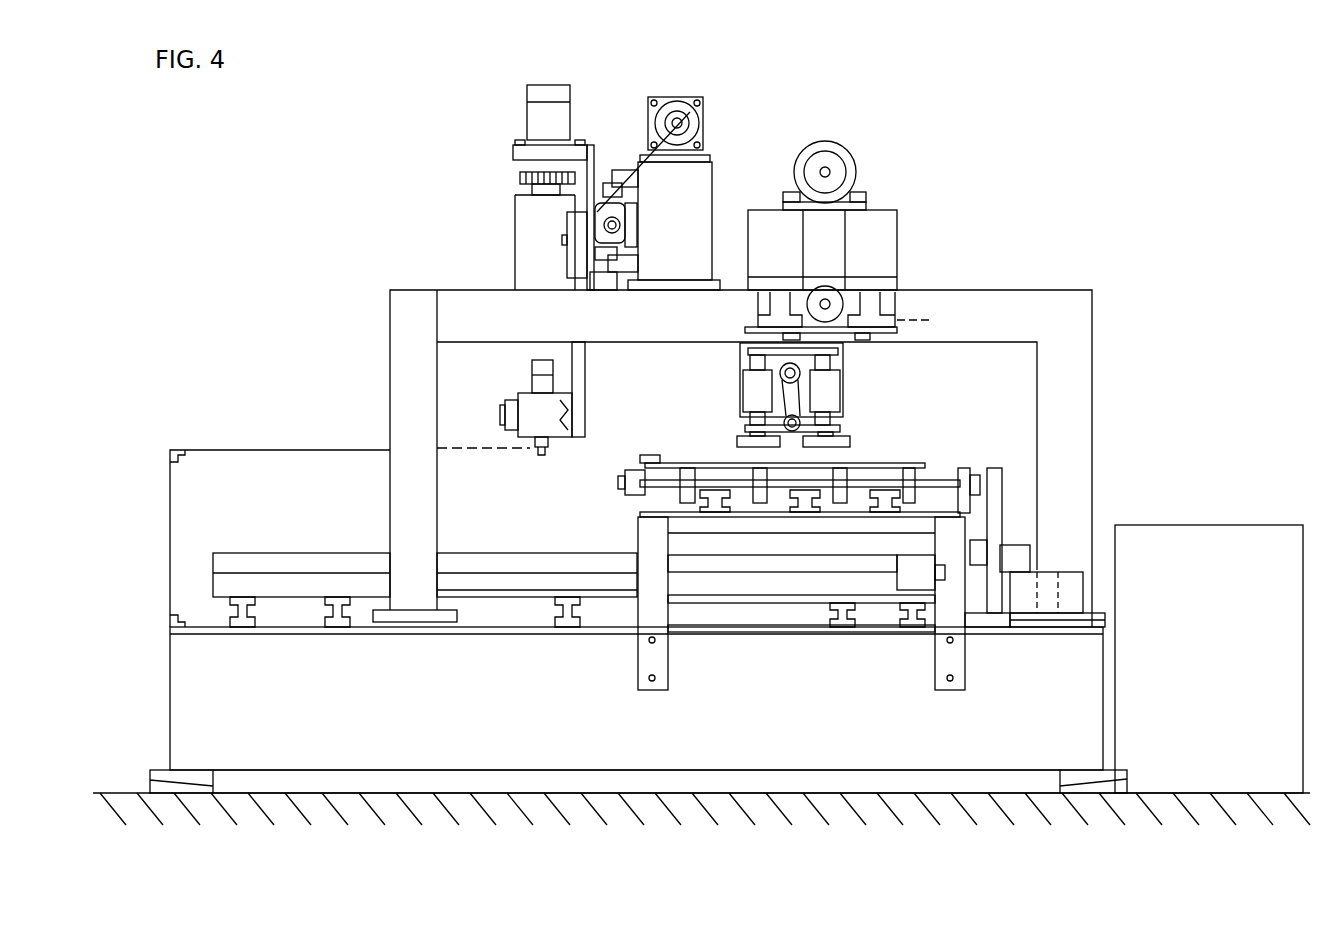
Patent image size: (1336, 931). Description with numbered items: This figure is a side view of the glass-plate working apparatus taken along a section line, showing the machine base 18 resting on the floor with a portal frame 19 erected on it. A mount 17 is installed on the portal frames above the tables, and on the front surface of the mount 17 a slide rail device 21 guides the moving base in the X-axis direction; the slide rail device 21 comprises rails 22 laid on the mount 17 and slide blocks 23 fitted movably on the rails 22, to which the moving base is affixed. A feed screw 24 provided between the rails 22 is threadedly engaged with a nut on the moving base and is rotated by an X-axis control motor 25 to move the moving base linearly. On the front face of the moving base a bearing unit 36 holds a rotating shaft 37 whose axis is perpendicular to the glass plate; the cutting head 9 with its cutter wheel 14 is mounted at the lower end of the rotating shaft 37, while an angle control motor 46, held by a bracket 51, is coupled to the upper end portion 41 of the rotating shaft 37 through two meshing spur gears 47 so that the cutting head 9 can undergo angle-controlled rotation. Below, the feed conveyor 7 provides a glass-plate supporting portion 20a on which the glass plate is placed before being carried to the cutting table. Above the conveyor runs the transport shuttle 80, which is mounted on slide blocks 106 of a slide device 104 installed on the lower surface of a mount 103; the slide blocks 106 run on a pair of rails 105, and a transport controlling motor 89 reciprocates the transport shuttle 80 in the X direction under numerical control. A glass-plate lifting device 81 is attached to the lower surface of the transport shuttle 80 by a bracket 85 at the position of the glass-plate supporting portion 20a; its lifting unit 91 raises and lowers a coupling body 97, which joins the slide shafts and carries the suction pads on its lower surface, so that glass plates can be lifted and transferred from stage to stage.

The feed conveyor 7 is at (758, 472).
The cutting head 9 is at (507, 415).
The cutter wheel 14 is at (540, 455).
The mount 17 is at (705, 168).
The machine base 18 is at (448, 719).
The portal frame 19 is at (1092, 323).
The glass-plate supporting portion 20a is at (830, 455).
The slide rail device 21 is at (605, 185).
The rail 22 is at (622, 167).
The slide block 23 is at (603, 265).
The feed screw 24 is at (622, 227).
The X-axis control motor 25 is at (703, 112).
The bearing unit 36 is at (520, 255).
The rotating shaft 37 is at (543, 198).
The upper end portion 41 is at (540, 193).
The angle control motor 46 is at (548, 90).
The spur gear 47 is at (527, 177).
The bracket 51 is at (560, 157).
The transport shuttle 80 is at (931, 321).
The glass-plate lifting device 81 is at (852, 372).
The bracket 85 is at (740, 365).
The transport controlling motor 89 is at (828, 150).
The lifting unit 91 is at (752, 348).
The coupling body 97 is at (745, 432).
The mount 103 is at (883, 217).
The slide device 104 is at (872, 300).
The rail 105 is at (783, 300).
The slide block 106 is at (880, 315).